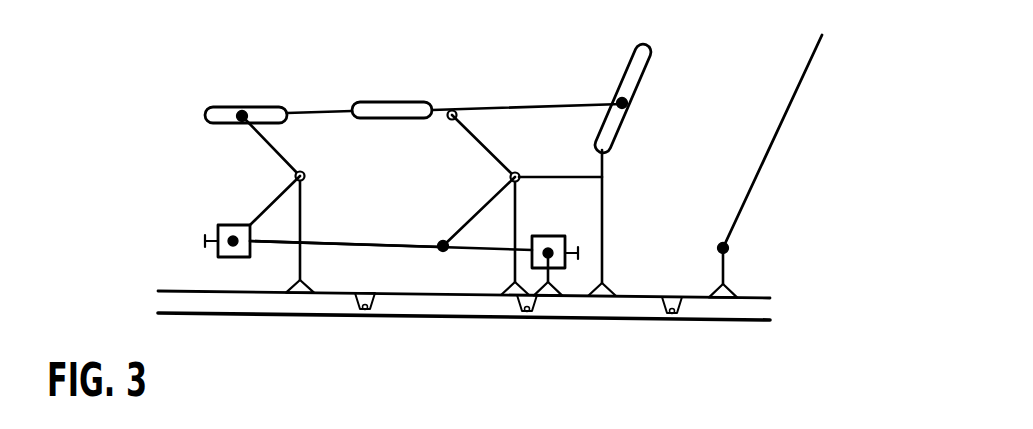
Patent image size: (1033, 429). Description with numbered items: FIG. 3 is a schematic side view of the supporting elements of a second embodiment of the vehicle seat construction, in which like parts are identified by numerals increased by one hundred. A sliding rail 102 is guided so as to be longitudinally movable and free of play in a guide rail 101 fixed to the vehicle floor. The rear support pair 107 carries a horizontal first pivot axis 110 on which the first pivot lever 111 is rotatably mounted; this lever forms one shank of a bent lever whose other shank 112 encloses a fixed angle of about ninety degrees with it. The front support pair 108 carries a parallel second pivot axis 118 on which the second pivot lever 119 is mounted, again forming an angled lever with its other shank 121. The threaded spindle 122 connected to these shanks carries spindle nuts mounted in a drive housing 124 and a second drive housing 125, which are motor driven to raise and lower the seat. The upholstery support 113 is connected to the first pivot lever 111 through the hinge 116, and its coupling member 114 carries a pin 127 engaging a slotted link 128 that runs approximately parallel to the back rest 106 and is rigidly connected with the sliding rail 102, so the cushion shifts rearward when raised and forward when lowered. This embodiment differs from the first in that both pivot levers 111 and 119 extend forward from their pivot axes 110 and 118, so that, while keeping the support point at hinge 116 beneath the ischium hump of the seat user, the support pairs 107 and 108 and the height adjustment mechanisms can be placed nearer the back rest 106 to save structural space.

The guide rail 101 is at (745, 320).
The sliding rail 102 is at (755, 297).
The back rest 106 is at (758, 176).
The rear support pair 107 is at (512, 266).
The front support pair 108 is at (297, 265).
The first pivot axis 110 is at (518, 181).
The first pivot lever 111 is at (486, 146).
The other shank 112 is at (480, 210).
The upholstery support 113 is at (320, 110).
The coupling member 114 is at (505, 108).
The hinge 116 is at (449, 119).
The second pivot axis 118 is at (306, 176).
The second pivot lever 119 is at (262, 138).
The other shank 121 is at (272, 203).
The threaded spindle 122 is at (446, 250).
The drive housing 124 is at (566, 268).
The second drive housing 125 is at (218, 254).
The pin 127 is at (630, 103).
The slotted link 128 is at (652, 60).